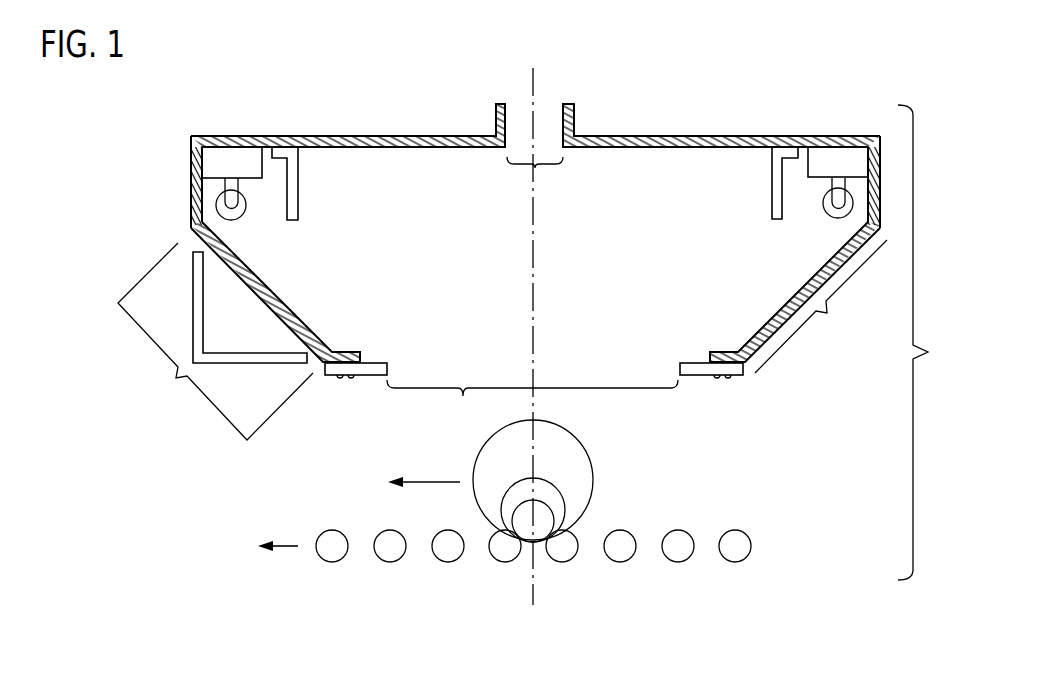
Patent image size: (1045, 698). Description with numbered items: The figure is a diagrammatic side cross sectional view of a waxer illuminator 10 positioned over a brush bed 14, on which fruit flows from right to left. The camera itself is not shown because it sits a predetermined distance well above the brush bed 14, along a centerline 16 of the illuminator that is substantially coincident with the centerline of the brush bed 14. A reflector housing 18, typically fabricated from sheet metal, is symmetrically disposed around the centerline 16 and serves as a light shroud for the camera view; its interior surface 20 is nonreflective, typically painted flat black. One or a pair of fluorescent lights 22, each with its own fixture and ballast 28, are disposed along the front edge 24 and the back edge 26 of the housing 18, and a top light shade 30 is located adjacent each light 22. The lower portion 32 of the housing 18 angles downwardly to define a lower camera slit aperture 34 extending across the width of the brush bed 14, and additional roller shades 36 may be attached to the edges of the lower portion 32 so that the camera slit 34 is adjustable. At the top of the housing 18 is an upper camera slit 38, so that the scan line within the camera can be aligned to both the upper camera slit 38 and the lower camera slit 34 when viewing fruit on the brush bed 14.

The waxer illuminator 10 is at (641, 112).
The brush bed 14 is at (323, 532).
The centerline 16 is at (534, 342).
The reflector housing 18 is at (740, 131).
The interior surface 20 is at (297, 318).
The fluorescent lights 22 is at (240, 220).
The front edge 24 is at (848, 128).
The back edge 26 is at (189, 150).
The fixture and ballast 28 is at (235, 150).
The top light shade 30 is at (298, 207).
The lower portion 32 is at (502, 331).
The lower camera slit aperture 34 is at (532, 404).
The roller shades 36 is at (377, 363).
The upper camera slit 38 is at (535, 181).